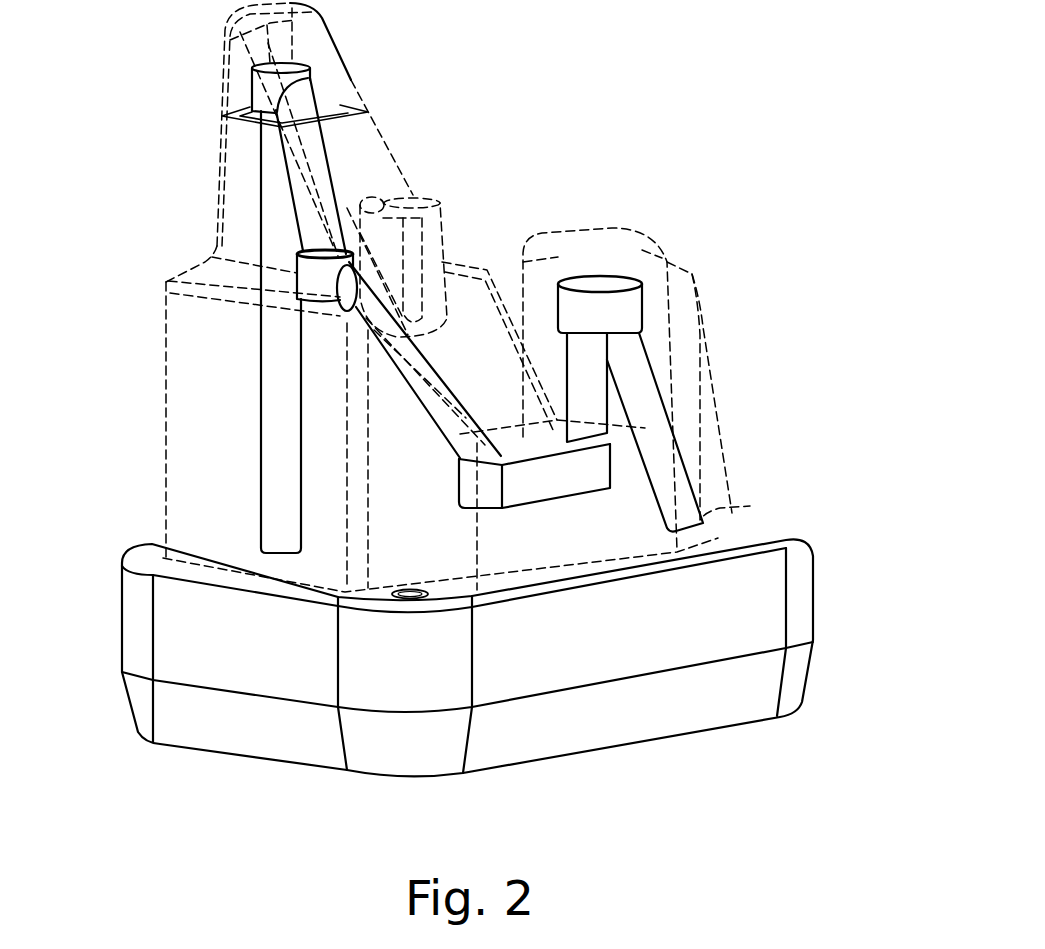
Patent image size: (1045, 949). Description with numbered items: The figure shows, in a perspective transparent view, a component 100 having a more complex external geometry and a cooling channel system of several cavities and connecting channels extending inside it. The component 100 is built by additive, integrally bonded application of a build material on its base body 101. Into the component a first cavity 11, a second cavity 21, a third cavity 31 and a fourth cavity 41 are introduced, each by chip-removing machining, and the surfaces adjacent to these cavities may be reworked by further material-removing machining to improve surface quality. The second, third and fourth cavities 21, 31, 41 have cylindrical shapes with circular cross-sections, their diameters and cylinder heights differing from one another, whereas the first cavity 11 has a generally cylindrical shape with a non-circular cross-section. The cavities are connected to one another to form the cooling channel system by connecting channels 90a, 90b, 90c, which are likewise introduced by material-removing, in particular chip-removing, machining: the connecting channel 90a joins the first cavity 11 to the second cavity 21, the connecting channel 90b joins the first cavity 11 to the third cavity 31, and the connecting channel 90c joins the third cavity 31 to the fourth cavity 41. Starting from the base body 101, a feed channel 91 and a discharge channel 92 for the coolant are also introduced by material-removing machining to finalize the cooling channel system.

The component 100 is at (237, 775).
The base body 101 is at (743, 598).
The first cavity 11 is at (567, 475).
The second cavity 21 is at (600, 308).
The third cavity 31 is at (313, 277).
The fourth cavity 41 is at (248, 70).
The connecting channel 90a is at (587, 400).
The connecting channel 90b is at (432, 392).
The connecting channel 90c is at (315, 183).
The feed channel 91 is at (277, 470).
The discharge channel 92 is at (665, 492).